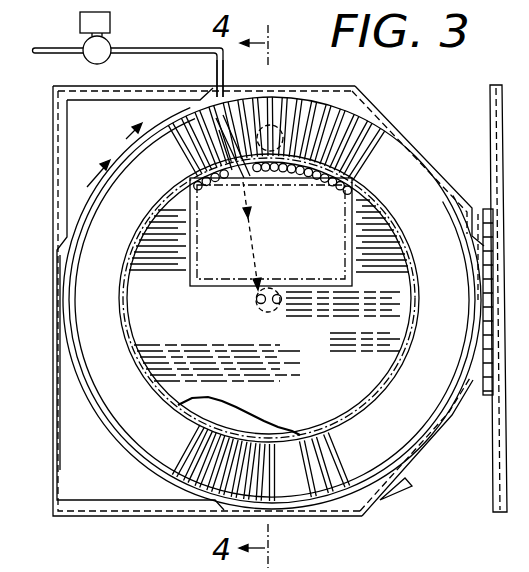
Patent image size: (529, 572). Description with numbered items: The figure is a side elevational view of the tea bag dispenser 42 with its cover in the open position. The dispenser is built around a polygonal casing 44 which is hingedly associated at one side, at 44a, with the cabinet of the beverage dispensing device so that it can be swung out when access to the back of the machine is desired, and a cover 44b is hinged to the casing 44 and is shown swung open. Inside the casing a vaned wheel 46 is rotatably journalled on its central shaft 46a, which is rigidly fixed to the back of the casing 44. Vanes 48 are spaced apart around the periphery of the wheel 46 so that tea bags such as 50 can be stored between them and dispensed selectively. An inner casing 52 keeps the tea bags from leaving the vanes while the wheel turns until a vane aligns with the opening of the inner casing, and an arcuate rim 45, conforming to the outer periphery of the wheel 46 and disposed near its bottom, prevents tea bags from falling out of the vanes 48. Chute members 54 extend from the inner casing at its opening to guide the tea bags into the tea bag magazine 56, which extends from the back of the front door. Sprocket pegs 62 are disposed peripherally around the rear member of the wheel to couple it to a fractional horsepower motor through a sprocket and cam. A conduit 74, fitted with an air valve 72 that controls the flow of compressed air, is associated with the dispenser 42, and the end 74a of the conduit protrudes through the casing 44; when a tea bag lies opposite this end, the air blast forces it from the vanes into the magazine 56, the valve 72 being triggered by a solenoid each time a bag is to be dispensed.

The tea bag dispenser 42 is at (104, 523).
The polygonal casing 44 is at (382, 490).
The hinge side of casing 44a is at (491, 400).
The cover 44b is at (491, 152).
The arcuate rim 45 is at (128, 456).
The vaned wheel 46 is at (88, 193).
The central shaft 46a is at (288, 307).
The vanes 48 is at (352, 142).
The tea bags 50 is at (188, 110).
The inner casing 52 is at (197, 178).
The chute members 54 is at (242, 175).
The tea bag magazine 56 is at (233, 267).
The sprocket pegs 62 is at (313, 174).
The air valve 72 is at (111, 22).
The conduit 74 is at (50, 48).
The end of conduit 74a is at (213, 100).